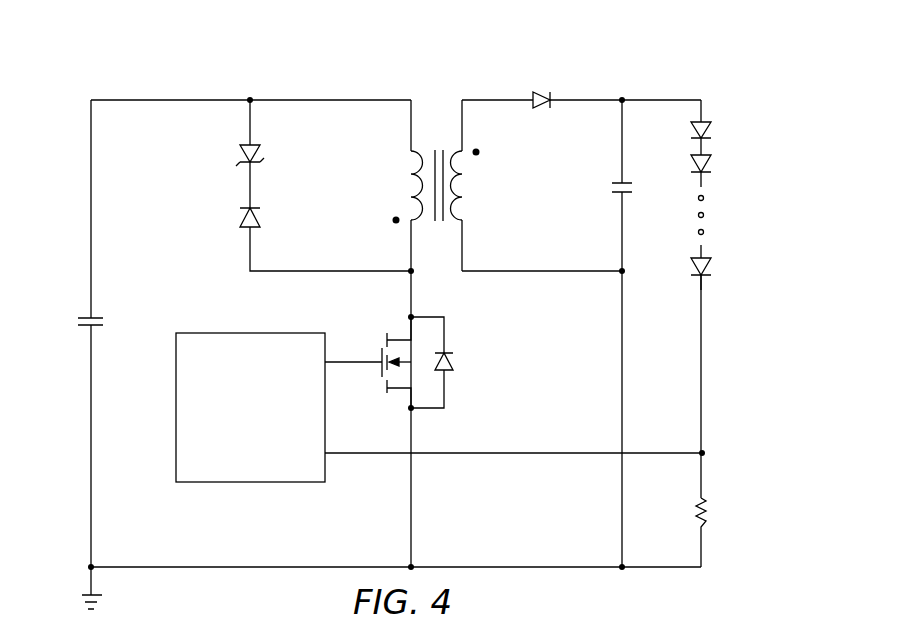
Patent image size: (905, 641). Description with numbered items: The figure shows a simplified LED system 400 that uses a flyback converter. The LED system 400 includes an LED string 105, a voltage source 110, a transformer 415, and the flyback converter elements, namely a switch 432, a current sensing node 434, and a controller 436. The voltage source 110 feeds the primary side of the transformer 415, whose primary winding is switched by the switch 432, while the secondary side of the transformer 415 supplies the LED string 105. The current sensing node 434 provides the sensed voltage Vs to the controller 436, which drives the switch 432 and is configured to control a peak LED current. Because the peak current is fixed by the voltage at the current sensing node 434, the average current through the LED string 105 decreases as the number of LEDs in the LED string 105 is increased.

The LED system 400 is at (276, 61).
The LED string 105 is at (730, 160).
The voltage source 110 is at (105, 322).
The transformer 415 is at (418, 150).
The switch 432 is at (453, 362).
The current sensing node 434 is at (708, 459).
The controller 436 is at (270, 447).